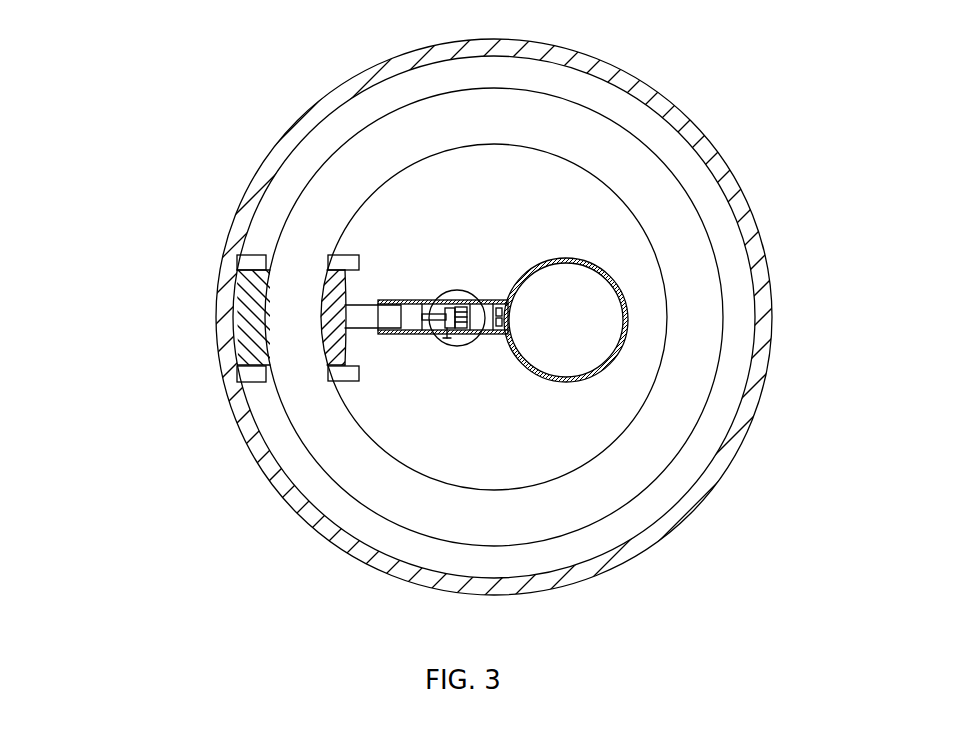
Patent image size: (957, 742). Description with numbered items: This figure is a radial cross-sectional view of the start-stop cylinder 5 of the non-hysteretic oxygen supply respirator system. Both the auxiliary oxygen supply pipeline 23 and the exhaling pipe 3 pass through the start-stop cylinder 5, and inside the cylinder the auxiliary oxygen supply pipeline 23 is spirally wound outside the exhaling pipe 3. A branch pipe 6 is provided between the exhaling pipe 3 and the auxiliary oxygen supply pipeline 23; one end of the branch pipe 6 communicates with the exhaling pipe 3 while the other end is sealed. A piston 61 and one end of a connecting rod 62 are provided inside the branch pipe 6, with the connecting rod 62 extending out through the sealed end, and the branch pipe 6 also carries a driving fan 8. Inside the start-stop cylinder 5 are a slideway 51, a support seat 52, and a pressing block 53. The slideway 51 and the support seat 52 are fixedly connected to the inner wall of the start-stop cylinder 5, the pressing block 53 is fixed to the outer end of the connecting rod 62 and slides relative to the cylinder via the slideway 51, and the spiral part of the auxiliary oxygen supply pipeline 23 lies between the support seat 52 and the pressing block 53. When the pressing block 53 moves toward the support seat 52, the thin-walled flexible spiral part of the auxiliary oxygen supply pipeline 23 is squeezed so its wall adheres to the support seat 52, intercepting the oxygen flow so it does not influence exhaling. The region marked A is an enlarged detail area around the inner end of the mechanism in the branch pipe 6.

The exhaling pipe 3 is at (630, 315).
The start-stop cylinder 5 is at (242, 218).
The branch pipe 6 is at (428, 300).
The driving fan 8 is at (497, 300).
The auxiliary oxygen supply pipeline 23 is at (670, 240).
The slideway 51 is at (257, 377).
The support seat 52 is at (253, 350).
The pressing block 53 is at (333, 278).
The piston 61 is at (413, 323).
The connecting rod 62 is at (366, 315).
The detail region A is at (462, 347).